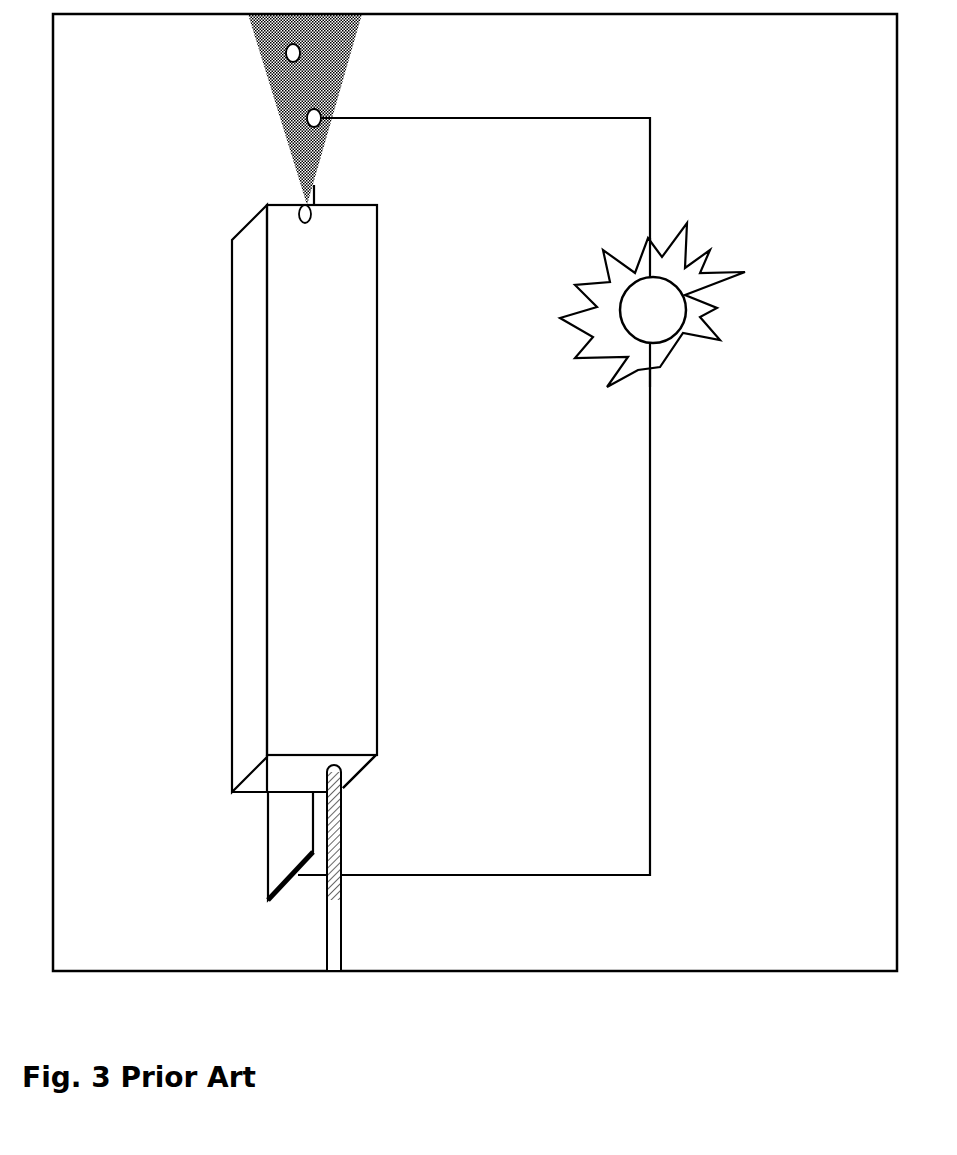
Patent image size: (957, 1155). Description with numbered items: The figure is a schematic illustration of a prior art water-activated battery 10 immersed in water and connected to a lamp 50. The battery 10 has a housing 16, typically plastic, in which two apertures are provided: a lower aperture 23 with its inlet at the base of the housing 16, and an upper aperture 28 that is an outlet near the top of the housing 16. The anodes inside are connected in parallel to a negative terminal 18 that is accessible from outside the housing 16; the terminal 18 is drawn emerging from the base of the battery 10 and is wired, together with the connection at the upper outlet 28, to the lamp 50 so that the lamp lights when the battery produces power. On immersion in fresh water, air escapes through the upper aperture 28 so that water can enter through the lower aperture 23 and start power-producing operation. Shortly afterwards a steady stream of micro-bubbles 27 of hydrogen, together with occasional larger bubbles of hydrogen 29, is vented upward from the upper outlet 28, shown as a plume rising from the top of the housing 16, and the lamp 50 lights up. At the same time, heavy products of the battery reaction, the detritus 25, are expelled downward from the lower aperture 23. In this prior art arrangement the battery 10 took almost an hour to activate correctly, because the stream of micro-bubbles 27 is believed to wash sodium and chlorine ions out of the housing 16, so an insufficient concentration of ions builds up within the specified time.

The battery 10 is at (157, 394).
The battery housing 16 is at (248, 749).
The negative terminal 18 is at (297, 873).
The lower aperture 23 is at (343, 788).
The detritus 25 is at (342, 900).
The micro-bubbles 27 is at (312, 67).
The upper aperture 28 is at (290, 206).
The hydrogen bubbles 29 is at (288, 52).
The lamp 50 is at (723, 275).